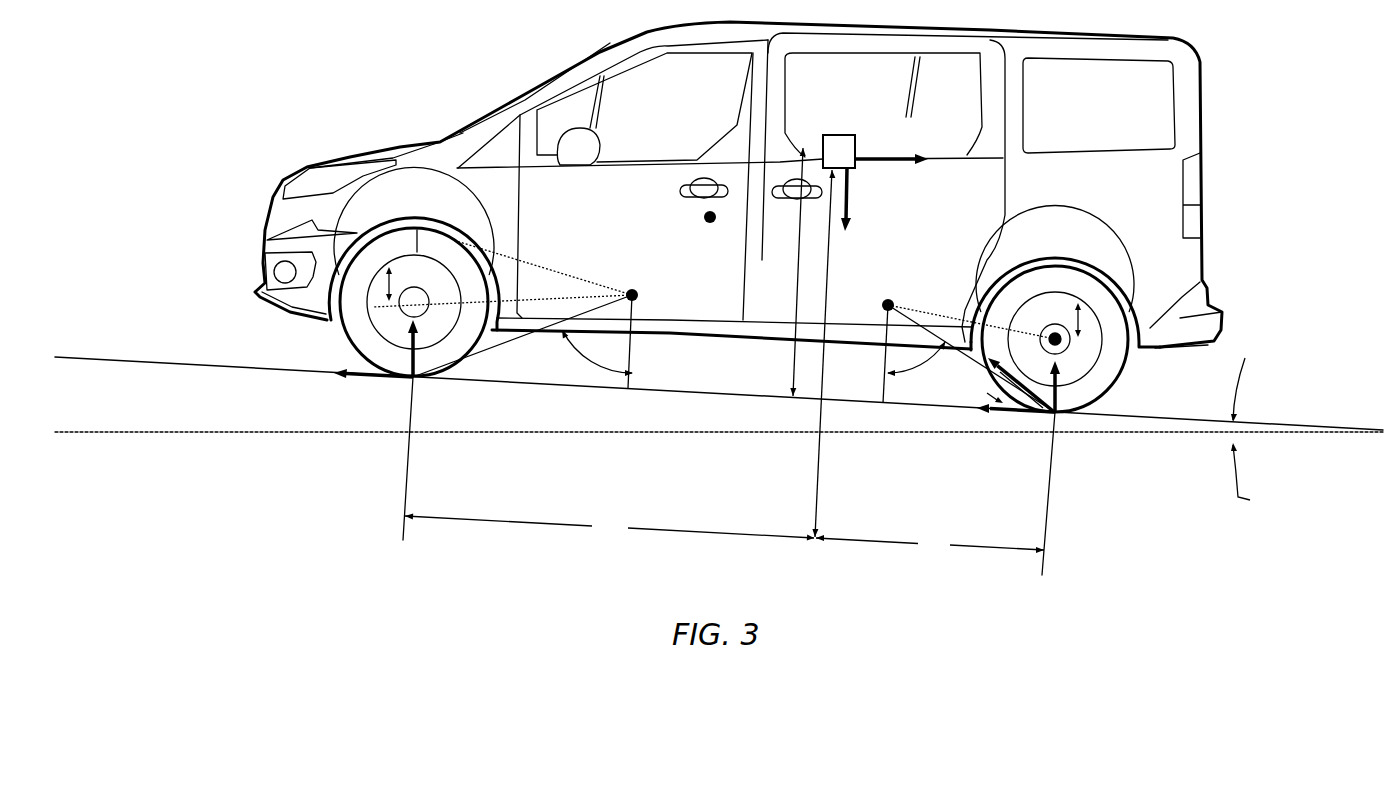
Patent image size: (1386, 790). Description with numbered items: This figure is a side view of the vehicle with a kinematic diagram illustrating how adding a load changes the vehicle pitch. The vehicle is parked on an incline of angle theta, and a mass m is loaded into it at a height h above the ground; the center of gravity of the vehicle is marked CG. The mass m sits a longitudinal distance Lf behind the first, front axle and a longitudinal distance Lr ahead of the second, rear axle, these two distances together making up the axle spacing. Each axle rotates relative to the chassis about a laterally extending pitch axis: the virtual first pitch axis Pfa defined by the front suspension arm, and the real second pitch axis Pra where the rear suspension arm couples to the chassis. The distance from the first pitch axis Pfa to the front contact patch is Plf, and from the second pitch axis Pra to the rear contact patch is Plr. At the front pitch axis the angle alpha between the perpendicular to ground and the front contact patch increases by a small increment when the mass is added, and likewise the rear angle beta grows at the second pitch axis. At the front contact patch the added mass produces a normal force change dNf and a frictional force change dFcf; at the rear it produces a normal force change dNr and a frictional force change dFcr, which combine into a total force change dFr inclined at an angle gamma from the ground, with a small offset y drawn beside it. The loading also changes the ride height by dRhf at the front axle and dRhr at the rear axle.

The center of gravity CG is at (692, 221).
The mass m is at (894, 181).
The height h is at (784, 272).
The longitudinal distance from first axle to mass Lf is at (609, 531).
The longitudinal distance from second axle to mass Lr is at (930, 550).
The first pitch axis Pfa is at (505, 314).
The second pitch axis Pra is at (966, 338).
The distance from first pitch axis to front contact patch Plf is at (550, 328).
The distance from second pitch axis to rear contact patch Plr is at (970, 358).
The front pitch angle alpha is at (583, 353).
The rear pitch angle beta is at (923, 367).
The change in front normal force dNf is at (435, 348).
The change in rear normal force dNr is at (1076, 386).
The change in front frictional force dFcf is at (359, 394).
The change in rear frictional force dFcr is at (1008, 430).
The total rear force change dFr is at (1020, 378).
The change in front ride height dRhf is at (388, 288).
The change in rear ride height dRhr is at (1080, 325).
The offset distance y is at (1007, 390).
The incline angle theta is at (1250, 438).